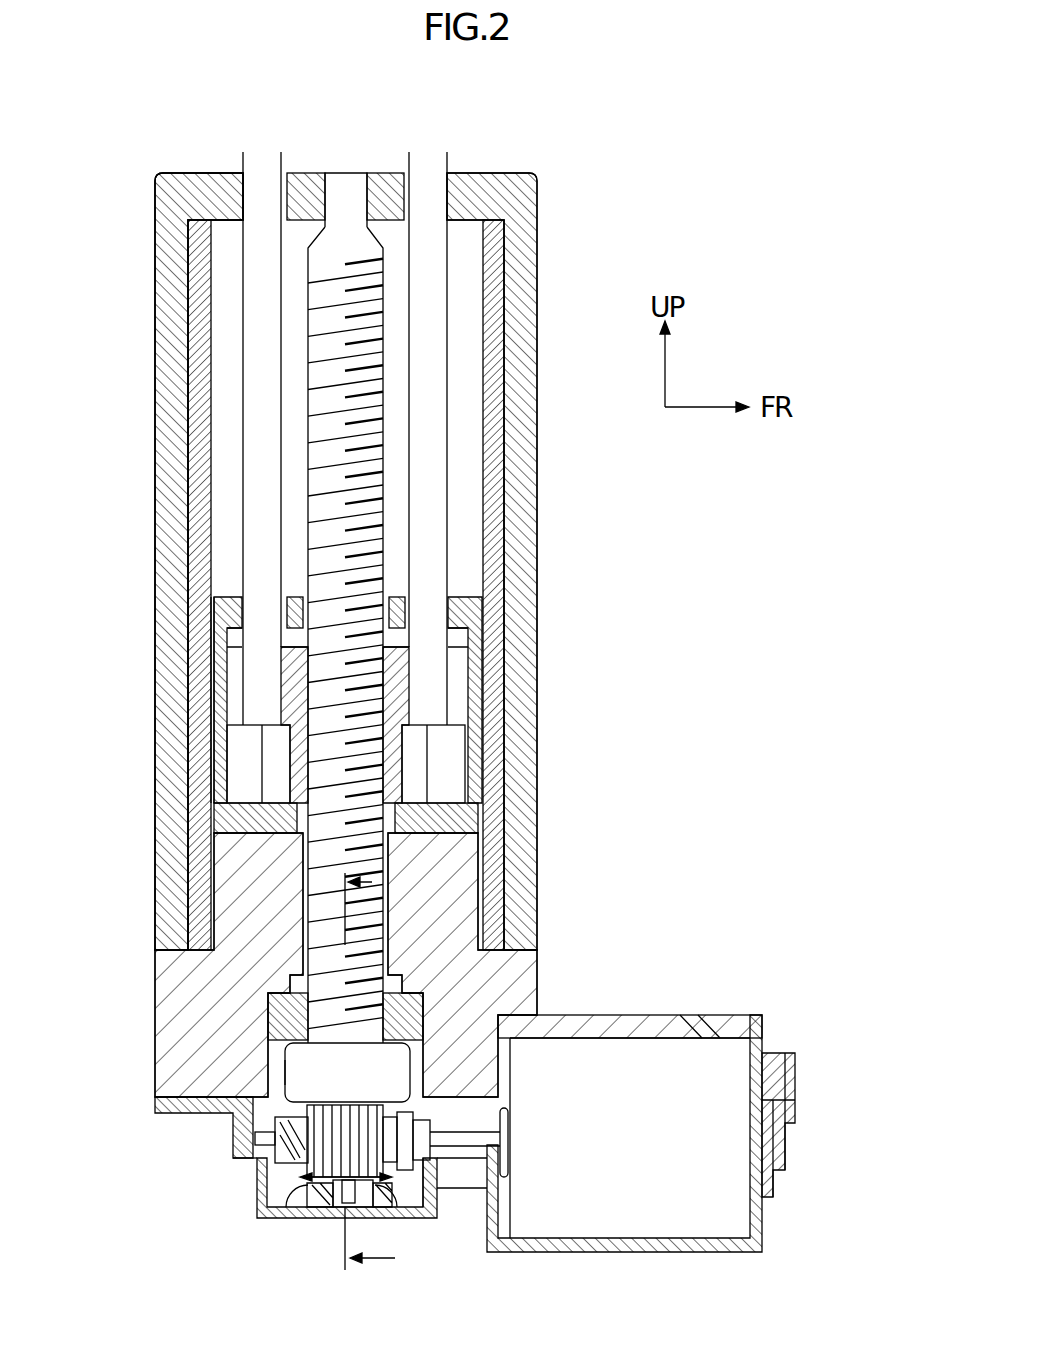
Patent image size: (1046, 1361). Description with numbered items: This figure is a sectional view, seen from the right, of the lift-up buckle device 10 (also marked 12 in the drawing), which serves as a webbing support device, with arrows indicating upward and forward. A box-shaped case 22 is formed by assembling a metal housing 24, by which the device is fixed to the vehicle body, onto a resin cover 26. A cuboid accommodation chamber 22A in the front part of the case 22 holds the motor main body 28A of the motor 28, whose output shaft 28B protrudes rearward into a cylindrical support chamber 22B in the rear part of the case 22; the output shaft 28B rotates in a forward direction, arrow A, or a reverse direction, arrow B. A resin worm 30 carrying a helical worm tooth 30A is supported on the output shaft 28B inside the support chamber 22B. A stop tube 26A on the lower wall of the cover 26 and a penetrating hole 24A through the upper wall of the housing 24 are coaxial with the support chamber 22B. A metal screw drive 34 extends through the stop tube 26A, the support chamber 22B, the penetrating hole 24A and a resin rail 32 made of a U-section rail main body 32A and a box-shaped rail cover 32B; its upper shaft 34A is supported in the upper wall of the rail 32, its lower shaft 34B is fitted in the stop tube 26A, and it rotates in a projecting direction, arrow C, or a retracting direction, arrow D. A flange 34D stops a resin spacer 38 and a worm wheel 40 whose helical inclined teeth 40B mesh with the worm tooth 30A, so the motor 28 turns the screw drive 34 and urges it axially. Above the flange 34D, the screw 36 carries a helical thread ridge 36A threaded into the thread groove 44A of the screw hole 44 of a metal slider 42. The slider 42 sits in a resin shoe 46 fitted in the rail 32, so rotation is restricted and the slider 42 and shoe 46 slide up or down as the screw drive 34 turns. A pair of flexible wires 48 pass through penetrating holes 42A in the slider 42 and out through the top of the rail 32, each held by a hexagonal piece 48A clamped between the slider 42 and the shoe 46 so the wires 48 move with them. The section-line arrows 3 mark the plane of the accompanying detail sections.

The lift-up buckle device 10 is at (616, 180).
The lifter 12 is at (199, 561).
The case 22 is at (153, 976).
The accommodation chamber 22A is at (566, 1046).
The support chamber 22B is at (283, 1054).
The housing 24 is at (650, 1015).
The penetrating hole 24A is at (316, 881).
The cover 26 is at (762, 1226).
The stop tube 26A is at (390, 1215).
The motor 28 is at (690, 1036).
The motor main body 28A is at (770, 1055).
The output shaft 28B is at (498, 1138).
The worm 30 is at (262, 1103).
The worm tooth 30A is at (265, 1175).
The rail 32 is at (182, 294).
The rail main body 32A is at (505, 298).
The rail cover 32B is at (537, 257).
The screw drive 34 is at (392, 407).
The upper shaft 34A is at (347, 185).
The lower shaft 34B is at (343, 1215).
The flange 34D is at (280, 1082).
The screw 36 is at (390, 470).
The thread ridge 36A is at (380, 507).
The spacer 38 is at (430, 998).
The worm wheel 40 is at (265, 1146).
The inclined teeth 40B is at (333, 1192).
The slider 42 is at (472, 632).
The penetrating holes 42A is at (242, 664).
The screw hole 44 is at (385, 700).
The thread groove 44A is at (318, 697).
The shoe 46 is at (462, 584).
The wires 48 is at (237, 346).
The piece 48A is at (240, 764).
The section line FIG. 3 is at (380, 1071).
The forward direction A is at (260, 1162).
The reverse direction B is at (262, 1122).
The projecting direction C is at (298, 1200).
The retracting direction D is at (385, 1190).